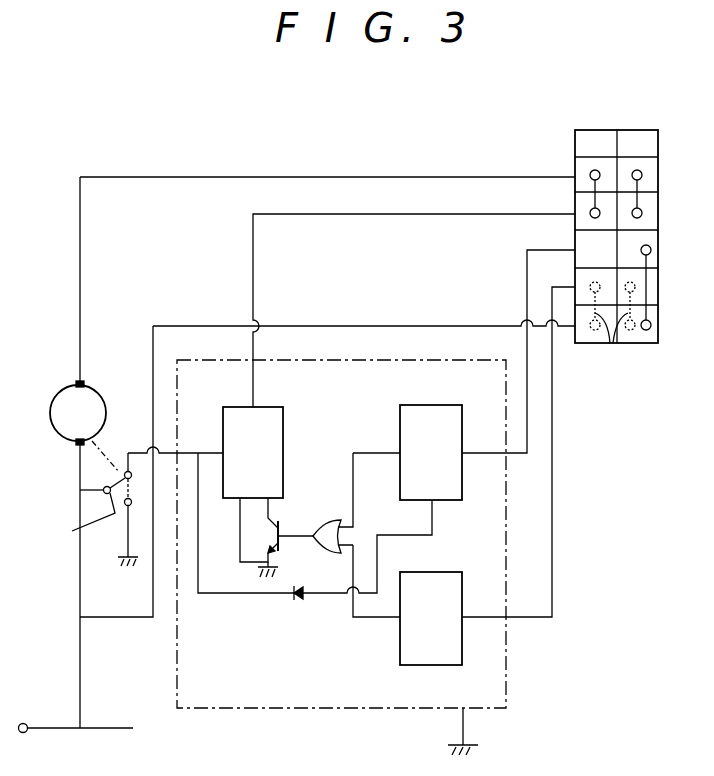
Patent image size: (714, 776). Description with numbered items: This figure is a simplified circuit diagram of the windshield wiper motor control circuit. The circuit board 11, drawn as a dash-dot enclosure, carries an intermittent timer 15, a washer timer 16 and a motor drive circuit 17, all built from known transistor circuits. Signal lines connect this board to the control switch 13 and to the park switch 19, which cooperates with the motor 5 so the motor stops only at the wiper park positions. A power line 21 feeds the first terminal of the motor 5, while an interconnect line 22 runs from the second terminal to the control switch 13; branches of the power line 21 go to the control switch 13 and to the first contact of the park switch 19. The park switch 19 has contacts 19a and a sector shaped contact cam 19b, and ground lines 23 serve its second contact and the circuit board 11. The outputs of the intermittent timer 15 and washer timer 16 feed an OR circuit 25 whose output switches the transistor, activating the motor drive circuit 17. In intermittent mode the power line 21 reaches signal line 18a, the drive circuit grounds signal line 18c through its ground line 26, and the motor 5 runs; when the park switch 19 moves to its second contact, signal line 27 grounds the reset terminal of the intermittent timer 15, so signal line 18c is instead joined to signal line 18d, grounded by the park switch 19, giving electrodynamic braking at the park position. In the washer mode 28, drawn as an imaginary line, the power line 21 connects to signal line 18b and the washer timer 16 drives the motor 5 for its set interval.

The motor 5 is at (92, 396).
The circuit board 11 is at (507, 671).
The control switch 13 is at (605, 120).
The intermittent timer 15 is at (420, 405).
The washer timer 16 is at (435, 572).
The motor drive circuit 17 is at (284, 415).
The signal line 18a is at (523, 457).
The signal line 18b is at (523, 613).
The signal line 18c is at (389, 215).
The signal line 18d is at (157, 452).
The park switch 19 is at (127, 467).
The contacts 19a is at (78, 519).
The contact cam 19b is at (97, 451).
The power line 21 is at (344, 325).
The interconnect line 22 is at (262, 176).
The ground lines 23 is at (465, 725).
The OR circuit 25 is at (330, 520).
The ground line 26 is at (257, 570).
The signal line 27 is at (258, 595).
The washer mode 28 is at (611, 345).